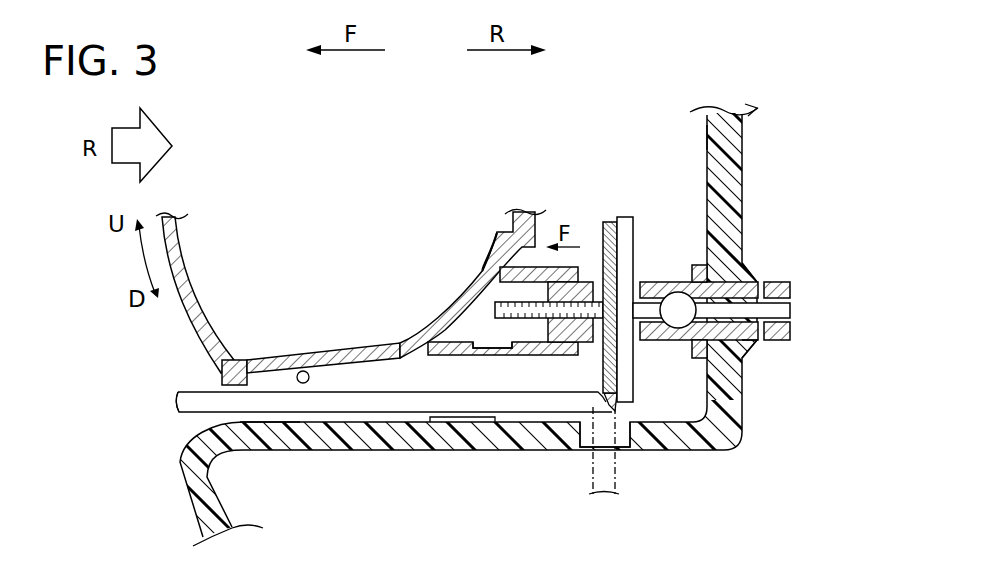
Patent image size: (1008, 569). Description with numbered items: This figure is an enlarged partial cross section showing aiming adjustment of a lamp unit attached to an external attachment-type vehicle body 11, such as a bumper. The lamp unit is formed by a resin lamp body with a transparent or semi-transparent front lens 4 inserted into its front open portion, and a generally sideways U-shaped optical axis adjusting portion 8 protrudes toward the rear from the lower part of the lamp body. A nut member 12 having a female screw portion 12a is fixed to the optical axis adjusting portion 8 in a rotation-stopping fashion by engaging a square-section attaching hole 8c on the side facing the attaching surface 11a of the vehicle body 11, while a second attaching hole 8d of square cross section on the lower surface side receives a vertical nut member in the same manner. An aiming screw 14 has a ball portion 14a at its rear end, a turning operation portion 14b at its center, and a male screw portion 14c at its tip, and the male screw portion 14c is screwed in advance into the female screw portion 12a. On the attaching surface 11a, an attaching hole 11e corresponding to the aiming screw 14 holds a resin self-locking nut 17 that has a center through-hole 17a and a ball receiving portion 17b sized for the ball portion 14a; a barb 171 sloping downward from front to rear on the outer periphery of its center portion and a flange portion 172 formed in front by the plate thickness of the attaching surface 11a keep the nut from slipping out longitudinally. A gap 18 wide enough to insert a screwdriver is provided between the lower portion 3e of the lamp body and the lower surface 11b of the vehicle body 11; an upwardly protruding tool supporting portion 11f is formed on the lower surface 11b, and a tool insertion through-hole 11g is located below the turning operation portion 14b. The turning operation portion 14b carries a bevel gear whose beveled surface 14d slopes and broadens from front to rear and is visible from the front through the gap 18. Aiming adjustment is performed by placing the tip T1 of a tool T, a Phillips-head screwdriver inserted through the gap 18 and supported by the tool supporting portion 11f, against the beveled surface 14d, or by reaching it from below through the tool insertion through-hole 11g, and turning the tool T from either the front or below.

The front lens 4 is at (187, 254).
The lower portion of the lamp body 3e is at (303, 370).
The nut member 12 is at (527, 262).
The female screw portion 12a is at (545, 292).
The aiming screw 14 is at (543, 277).
The ball portion 14a is at (678, 322).
The turning operation portion 14b is at (625, 216).
The male screw portion 14c is at (495, 308).
The beveled surface 14d is at (606, 221).
The optical axis adjusting portion 8 is at (429, 367).
The attaching hole 8c is at (578, 325).
The attaching hole 8d is at (478, 352).
The vehicle body 11 is at (750, 165).
The attaching surface 11a is at (706, 137).
The lower surface 11b is at (274, 413).
The attaching hole 11e is at (738, 277).
The tool supporting portion 11f is at (457, 418).
The tool insertion through-hole 11g is at (583, 442).
The self-locking nut 17 is at (752, 338).
The center through-hole 17a is at (787, 311).
The ball receiving portion 17b is at (677, 294).
The barb 171 is at (748, 344).
The flange portion 172 is at (699, 362).
The gap 18 is at (198, 421).
The tool T is at (212, 392).
The tip of the tool T1 is at (626, 451).